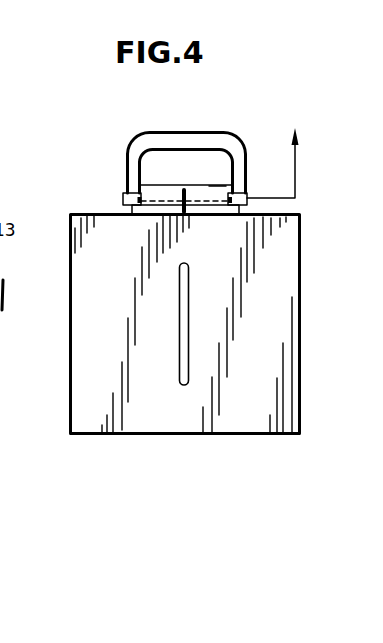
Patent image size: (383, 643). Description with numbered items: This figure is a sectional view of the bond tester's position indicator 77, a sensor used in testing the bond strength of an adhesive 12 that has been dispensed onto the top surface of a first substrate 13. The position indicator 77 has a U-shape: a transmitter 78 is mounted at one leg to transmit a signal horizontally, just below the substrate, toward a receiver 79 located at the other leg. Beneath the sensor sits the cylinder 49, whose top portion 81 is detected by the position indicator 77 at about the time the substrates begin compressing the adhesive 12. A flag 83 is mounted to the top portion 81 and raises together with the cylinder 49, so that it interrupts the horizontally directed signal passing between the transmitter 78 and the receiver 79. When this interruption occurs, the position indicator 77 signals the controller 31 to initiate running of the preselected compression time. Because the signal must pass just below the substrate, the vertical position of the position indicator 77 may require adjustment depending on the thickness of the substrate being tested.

The adhesive 12 is at (179, 367).
The first substrate 13 is at (70, 317).
The controller 31 is at (279, 150).
The cylinder 49 is at (131, 206).
The position indicator 77 is at (209, 141).
The transmitter 78 is at (124, 198).
The receiver 79 is at (247, 193).
The top portion 81 is at (217, 195).
The flag 83 is at (183, 194).